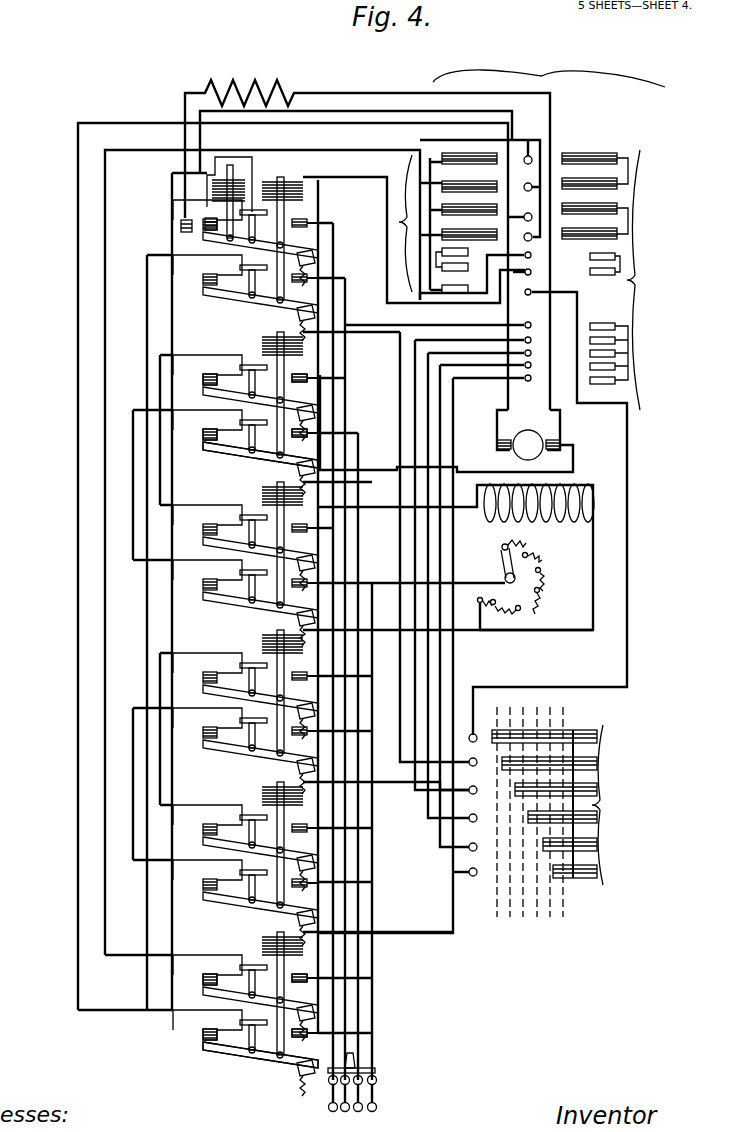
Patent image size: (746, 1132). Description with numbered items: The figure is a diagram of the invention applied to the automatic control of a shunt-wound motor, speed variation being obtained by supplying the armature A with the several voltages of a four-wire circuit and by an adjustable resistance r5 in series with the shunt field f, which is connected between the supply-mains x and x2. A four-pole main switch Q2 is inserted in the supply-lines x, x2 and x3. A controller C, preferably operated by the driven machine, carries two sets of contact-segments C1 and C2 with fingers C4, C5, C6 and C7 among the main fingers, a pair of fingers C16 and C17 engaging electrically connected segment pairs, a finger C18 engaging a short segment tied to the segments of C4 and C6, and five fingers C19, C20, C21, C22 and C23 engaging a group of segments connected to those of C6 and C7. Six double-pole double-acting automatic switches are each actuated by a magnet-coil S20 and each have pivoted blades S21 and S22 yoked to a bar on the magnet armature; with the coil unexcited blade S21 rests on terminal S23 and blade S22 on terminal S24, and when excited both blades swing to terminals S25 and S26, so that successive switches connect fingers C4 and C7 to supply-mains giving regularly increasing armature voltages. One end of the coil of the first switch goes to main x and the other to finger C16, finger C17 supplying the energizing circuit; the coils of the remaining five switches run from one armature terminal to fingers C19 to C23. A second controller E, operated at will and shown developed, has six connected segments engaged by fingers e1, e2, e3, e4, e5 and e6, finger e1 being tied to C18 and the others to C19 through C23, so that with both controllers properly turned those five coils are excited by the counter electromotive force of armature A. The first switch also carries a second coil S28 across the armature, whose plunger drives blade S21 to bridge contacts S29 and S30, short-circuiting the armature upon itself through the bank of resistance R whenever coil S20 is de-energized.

The bank of resistance R is at (367, 231).
The controller C is at (549, 61).
The set of contact-segments C1 is at (433, 223).
The set of contact-segments C2 is at (619, 280).
The contact-finger C4 is at (533, 158).
The contact-finger C5 is at (522, 180).
The contact-finger C6 is at (521, 210).
The contact-finger C7 is at (520, 231).
The contact-finger C16 is at (535, 249).
The contact-finger C17 is at (531, 278).
The contact-finger C18 is at (527, 298).
The contact-finger C19 is at (529, 319).
The contact-finger C20 is at (535, 336).
The contact-finger C21 is at (535, 349).
The contact-finger C22 is at (535, 361).
The contact-finger C23 is at (535, 374).
The armature of the motor A is at (540, 452).
The shunt field f is at (556, 525).
The adjustable resistance r5 is at (542, 577).
The second controller E is at (559, 812).
The contact-finger e1 is at (471, 733).
The contact-finger e2 is at (470, 754).
The contact-finger e3 is at (472, 782).
The contact-finger e4 is at (472, 810).
The contact-finger e5 is at (471, 839).
The contact-finger e6 is at (470, 865).
The magnet-coil S20 is at (298, 936).
The pivoted blade S21 is at (262, 1012).
The pivoted blade S22 is at (263, 1056).
The terminal S23 is at (212, 1029).
The terminal S24 is at (192, 413).
The terminal S25 is at (300, 988).
The terminal S26 is at (300, 428).
The second magnetic coil S28 is at (232, 182).
The contact S29 is at (180, 228).
The contact S30 is at (211, 232).
The four-pole main switch Q2 is at (378, 1080).
The supply-line x is at (328, 1101).
The supply-line x2 is at (350, 1101).
The supply-line x3 is at (377, 1105).